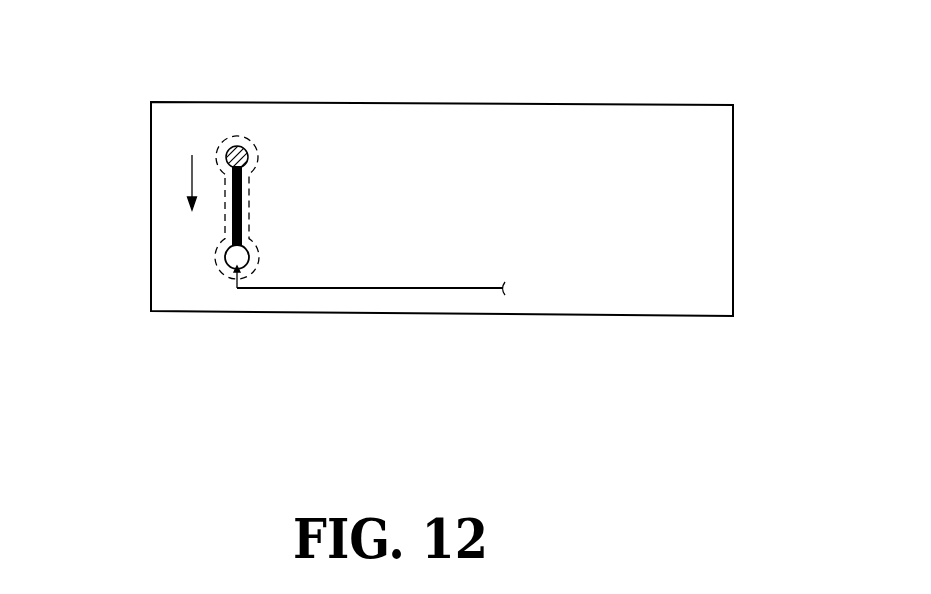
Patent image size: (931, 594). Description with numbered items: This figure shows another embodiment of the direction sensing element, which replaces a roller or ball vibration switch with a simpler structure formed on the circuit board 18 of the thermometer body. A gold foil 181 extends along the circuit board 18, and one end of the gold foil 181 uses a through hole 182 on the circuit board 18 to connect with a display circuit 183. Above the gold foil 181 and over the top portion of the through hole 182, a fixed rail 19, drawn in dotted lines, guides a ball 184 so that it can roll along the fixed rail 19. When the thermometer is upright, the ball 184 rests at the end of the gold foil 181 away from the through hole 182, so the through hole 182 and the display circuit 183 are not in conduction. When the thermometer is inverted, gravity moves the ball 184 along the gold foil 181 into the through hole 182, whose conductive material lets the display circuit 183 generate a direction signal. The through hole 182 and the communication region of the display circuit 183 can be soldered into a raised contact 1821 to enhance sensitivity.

The circuit board 18 is at (712, 248).
The gold foil 181 is at (243, 207).
The through hole 182 is at (231, 263).
The raised contact 1821 is at (237, 268).
The display circuit 183 is at (442, 289).
The ball 184 is at (232, 147).
The fixed rail 19 is at (215, 253).